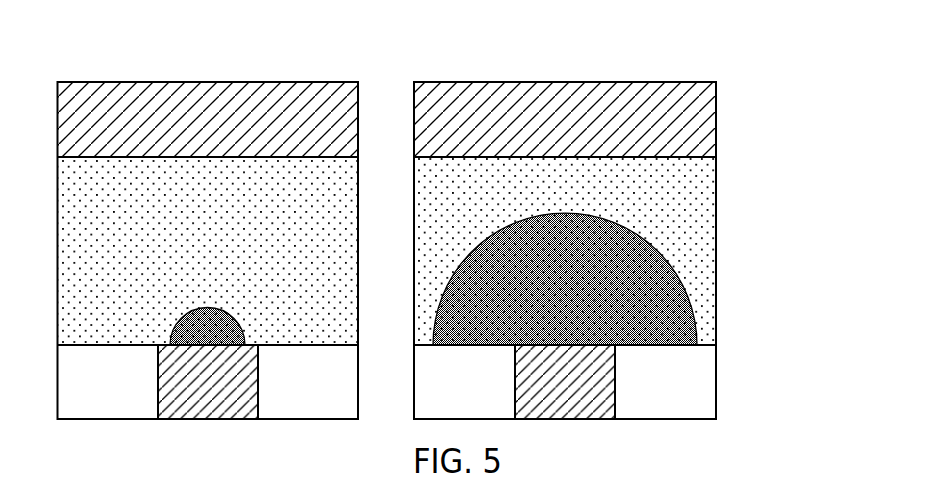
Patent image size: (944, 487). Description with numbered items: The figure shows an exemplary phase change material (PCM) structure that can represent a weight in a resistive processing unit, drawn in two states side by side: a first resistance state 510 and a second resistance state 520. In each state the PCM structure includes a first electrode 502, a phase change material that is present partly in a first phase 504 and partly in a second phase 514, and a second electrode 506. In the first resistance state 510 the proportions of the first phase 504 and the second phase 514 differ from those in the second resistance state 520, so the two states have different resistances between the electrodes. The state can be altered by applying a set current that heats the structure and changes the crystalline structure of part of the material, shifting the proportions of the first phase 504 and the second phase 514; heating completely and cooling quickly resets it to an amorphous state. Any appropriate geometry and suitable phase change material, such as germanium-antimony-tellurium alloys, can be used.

The first resistance state 510 is at (357, 82).
The second resistance state 520 is at (627, 216).
The first electrode 502 is at (716, 117).
The phase change material in a first phase 504 is at (715, 238).
The phase change material in a second phase 514 is at (696, 324).
The second electrode 506 is at (615, 380).